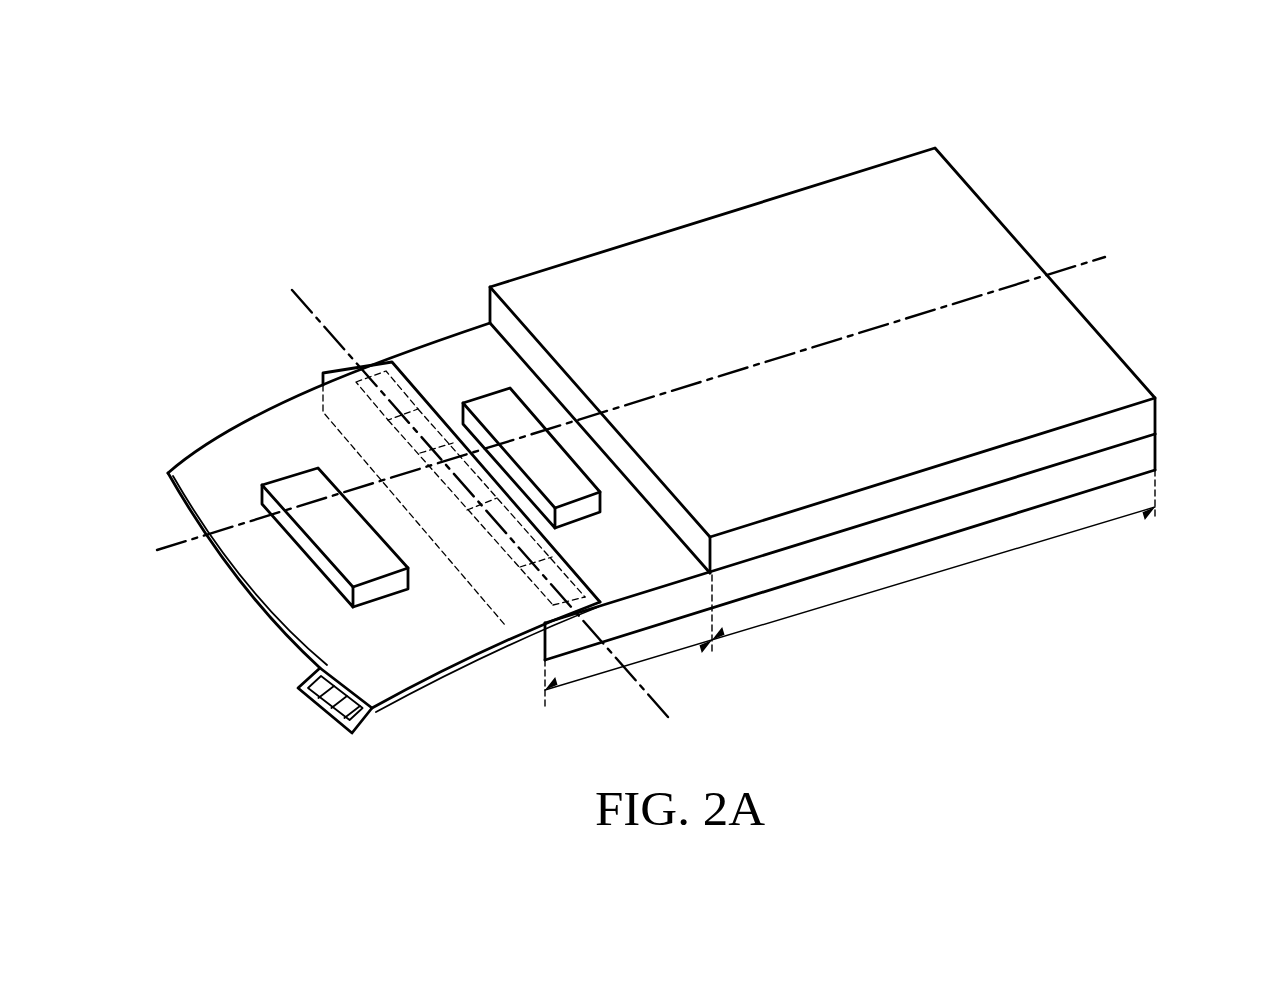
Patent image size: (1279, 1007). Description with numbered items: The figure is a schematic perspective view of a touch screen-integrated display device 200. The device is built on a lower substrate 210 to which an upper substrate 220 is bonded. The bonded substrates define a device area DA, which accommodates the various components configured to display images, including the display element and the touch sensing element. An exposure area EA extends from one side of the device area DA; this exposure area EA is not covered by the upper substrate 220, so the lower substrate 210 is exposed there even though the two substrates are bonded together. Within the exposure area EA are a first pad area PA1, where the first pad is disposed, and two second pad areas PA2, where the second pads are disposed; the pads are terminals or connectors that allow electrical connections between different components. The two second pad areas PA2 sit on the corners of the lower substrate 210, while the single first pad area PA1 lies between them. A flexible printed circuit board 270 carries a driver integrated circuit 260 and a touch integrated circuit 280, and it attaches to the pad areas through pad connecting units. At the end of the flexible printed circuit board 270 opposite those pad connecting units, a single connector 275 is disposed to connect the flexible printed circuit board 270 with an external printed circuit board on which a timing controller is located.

The touch screen-integrated display device 200 is at (1127, 76).
The lower substrate 210 is at (1140, 458).
The upper substrate 220 is at (1137, 420).
The driver integrated circuit 260 is at (528, 410).
The flexible printed circuit board 270 is at (168, 493).
The connector 275 is at (323, 710).
The touch integrated circuit 280 is at (291, 472).
The first pad area PA1 is at (448, 462).
The second pad area PA2 is at (373, 375).
The device area DA is at (850, 590).
The exposure area EA is at (675, 659).